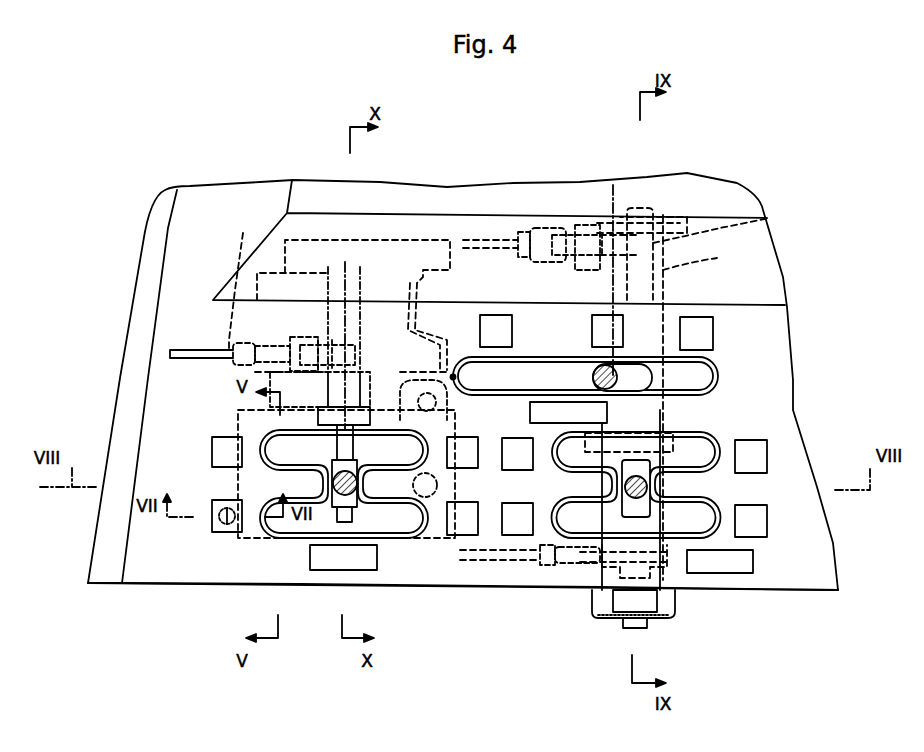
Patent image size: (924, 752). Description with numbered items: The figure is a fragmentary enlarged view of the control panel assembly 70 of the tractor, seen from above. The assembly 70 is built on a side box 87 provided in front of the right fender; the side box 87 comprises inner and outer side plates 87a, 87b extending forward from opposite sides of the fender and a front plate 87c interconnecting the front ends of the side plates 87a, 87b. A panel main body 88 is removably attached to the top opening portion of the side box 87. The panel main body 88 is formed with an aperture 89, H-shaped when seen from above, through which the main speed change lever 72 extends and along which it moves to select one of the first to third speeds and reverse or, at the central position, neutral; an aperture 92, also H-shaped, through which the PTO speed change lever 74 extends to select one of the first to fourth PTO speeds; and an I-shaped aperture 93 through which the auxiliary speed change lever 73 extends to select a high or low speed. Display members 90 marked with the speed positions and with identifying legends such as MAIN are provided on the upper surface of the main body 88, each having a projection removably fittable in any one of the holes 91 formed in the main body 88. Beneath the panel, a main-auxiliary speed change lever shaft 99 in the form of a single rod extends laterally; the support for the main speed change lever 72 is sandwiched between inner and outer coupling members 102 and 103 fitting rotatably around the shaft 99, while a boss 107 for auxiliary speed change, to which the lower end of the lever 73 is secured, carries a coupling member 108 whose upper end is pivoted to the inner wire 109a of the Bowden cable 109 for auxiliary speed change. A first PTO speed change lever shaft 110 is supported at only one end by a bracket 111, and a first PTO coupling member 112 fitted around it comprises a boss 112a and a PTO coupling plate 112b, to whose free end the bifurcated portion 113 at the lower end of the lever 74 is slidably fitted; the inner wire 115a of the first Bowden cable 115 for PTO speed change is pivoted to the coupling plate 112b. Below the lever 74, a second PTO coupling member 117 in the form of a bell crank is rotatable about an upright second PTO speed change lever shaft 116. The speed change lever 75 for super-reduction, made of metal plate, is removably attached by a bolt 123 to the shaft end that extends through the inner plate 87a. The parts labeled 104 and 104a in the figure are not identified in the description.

The control panel assembly 70 is at (153, 598).
The main speed change lever 72 is at (622, 507).
The auxiliary speed change lever 73 is at (597, 380).
The PTO speed change lever 74 is at (355, 495).
The speed change lever for super-reduction 75 is at (660, 615).
The side box 87 is at (798, 597).
The inner side plate 87a is at (470, 590).
The outer side plate 87b is at (650, 647).
The front plate 87c is at (100, 583).
The panel main body 88 is at (187, 578).
The aperture 89 is at (700, 510).
The display members 90 is at (622, 315).
The hole 91 is at (212, 520).
The aperture 92 is at (288, 523).
The aperture 93 is at (720, 373).
The main-auxiliary speed change lever shaft 99 is at (647, 205).
The inner coupling member 102 is at (668, 530).
The outer coupling member 103 is at (680, 450).
The shift rod 104 is at (505, 566).
The shift rod end 104a is at (523, 560).
The boss for auxiliary speed change 107 is at (712, 260).
The coupling member for auxiliary speed change 108 is at (770, 217).
The Bowden cable for auxiliary speed change 109 is at (492, 228).
The inner wire 109a is at (520, 237).
The first PTO speed change lever shaft 110 is at (367, 287).
The bracket 111 is at (455, 275).
The first PTO coupling member 112 is at (455, 377).
The boss 112a is at (366, 402).
The PTO coupling plate 112b is at (330, 337).
The bifurcated portion 113 is at (332, 463).
The first Bowden cable for PTO speed change 115 is at (200, 341).
The inner wire 115a is at (243, 278).
The second PTO speed change lever shaft 116 is at (440, 486).
The second PTO coupling member 117 is at (415, 513).
The bolt 123 is at (648, 637).